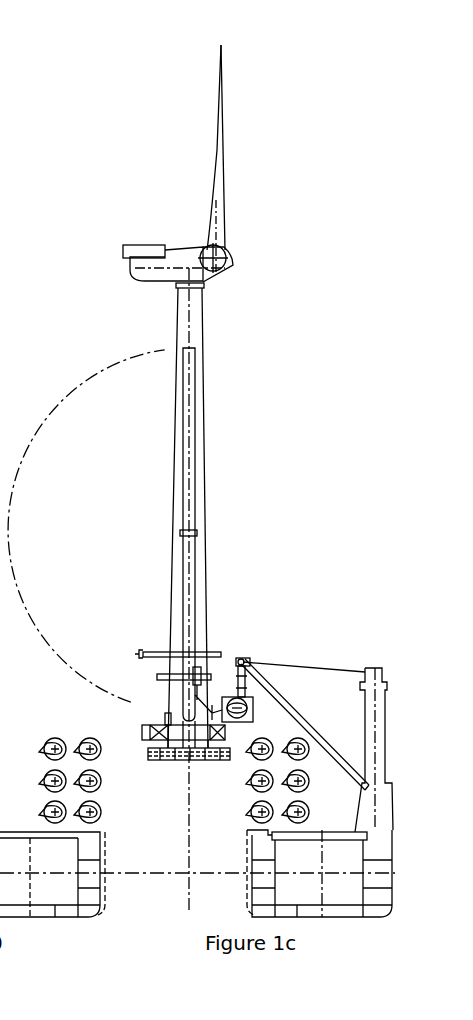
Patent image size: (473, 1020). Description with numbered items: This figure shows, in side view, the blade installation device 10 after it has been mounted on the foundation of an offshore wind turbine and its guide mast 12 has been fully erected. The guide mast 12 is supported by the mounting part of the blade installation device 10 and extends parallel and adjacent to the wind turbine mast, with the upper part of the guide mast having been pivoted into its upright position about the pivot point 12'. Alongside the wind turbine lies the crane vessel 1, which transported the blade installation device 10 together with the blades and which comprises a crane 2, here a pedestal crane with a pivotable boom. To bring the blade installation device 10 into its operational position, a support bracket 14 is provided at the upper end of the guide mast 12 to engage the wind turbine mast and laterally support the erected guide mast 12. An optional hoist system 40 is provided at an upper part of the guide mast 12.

The crane vessel 1 is at (196, 873).
The crane 2 is at (387, 737).
The blade installation device 10 is at (200, 592).
The guide mast 12 is at (265, 534).
The pivot point 12' is at (138, 514).
The support bracket 14 is at (225, 660).
The hoist system 40 is at (160, 652).